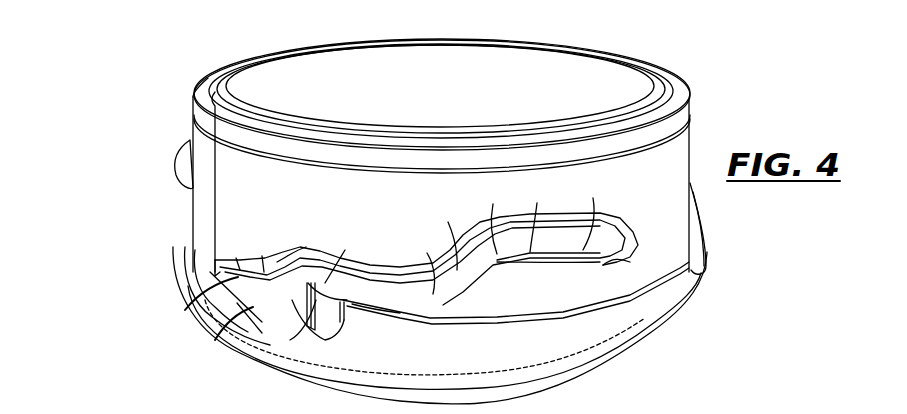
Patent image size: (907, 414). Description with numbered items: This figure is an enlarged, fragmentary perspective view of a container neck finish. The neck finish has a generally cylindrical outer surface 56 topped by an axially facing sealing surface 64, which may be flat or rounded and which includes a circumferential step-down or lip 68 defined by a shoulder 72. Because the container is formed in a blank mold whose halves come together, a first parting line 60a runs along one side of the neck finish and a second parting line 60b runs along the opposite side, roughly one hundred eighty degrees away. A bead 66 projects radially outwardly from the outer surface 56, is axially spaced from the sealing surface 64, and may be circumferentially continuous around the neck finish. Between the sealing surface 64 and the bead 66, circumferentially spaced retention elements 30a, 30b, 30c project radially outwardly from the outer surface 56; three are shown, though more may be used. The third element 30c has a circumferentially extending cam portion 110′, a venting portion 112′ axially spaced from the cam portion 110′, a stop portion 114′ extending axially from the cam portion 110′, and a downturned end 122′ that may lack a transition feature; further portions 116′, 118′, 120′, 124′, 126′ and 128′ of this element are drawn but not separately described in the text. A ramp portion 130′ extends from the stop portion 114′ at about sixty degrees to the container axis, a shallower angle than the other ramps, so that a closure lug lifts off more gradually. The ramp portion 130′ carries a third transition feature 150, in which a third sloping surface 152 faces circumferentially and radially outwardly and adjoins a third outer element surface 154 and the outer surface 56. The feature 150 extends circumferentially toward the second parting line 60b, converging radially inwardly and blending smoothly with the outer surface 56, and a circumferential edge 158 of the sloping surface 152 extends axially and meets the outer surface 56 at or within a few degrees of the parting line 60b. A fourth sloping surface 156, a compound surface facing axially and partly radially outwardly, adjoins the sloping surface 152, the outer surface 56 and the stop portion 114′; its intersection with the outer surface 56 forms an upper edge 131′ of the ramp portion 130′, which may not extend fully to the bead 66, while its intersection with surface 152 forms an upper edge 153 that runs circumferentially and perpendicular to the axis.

The outer surface 56 is at (689, 134).
The axially facing sealing surface 64 is at (665, 83).
The step-down or lip 68 is at (238, 93).
The first parting line 60a is at (632, 88).
The shoulder 72 is at (210, 74).
The second parting line 60b is at (213, 209).
The second retention element 30b is at (168, 163).
The first retention element 30a is at (705, 253).
The third retention element 30c is at (396, 309).
The bead 66 is at (693, 308).
The circumferential edge 158 is at (213, 261).
The ramp portion 130′ is at (238, 246).
The upper edge 131′ is at (262, 254).
The fourth sloping surface 156 is at (277, 260).
The groove segment 118′ is at (353, 254).
The cam portion 110′ is at (365, 290).
The groove segment 116′ is at (419, 262).
The groove segment 124′ is at (449, 235).
The groove segment 128′ is at (489, 218).
The venting portion 112′ is at (535, 215).
The groove end segment 126′ is at (590, 211).
The downturned end 122′ is at (632, 258).
The groove ledge 120′ is at (535, 259).
The third outer element surface 154 is at (410, 300).
The stop portion 114′ is at (310, 327).
The upper edge of third sloping surface 153 is at (213, 279).
The third sloping surface 152 is at (192, 315).
The third transition feature 150 is at (214, 338).